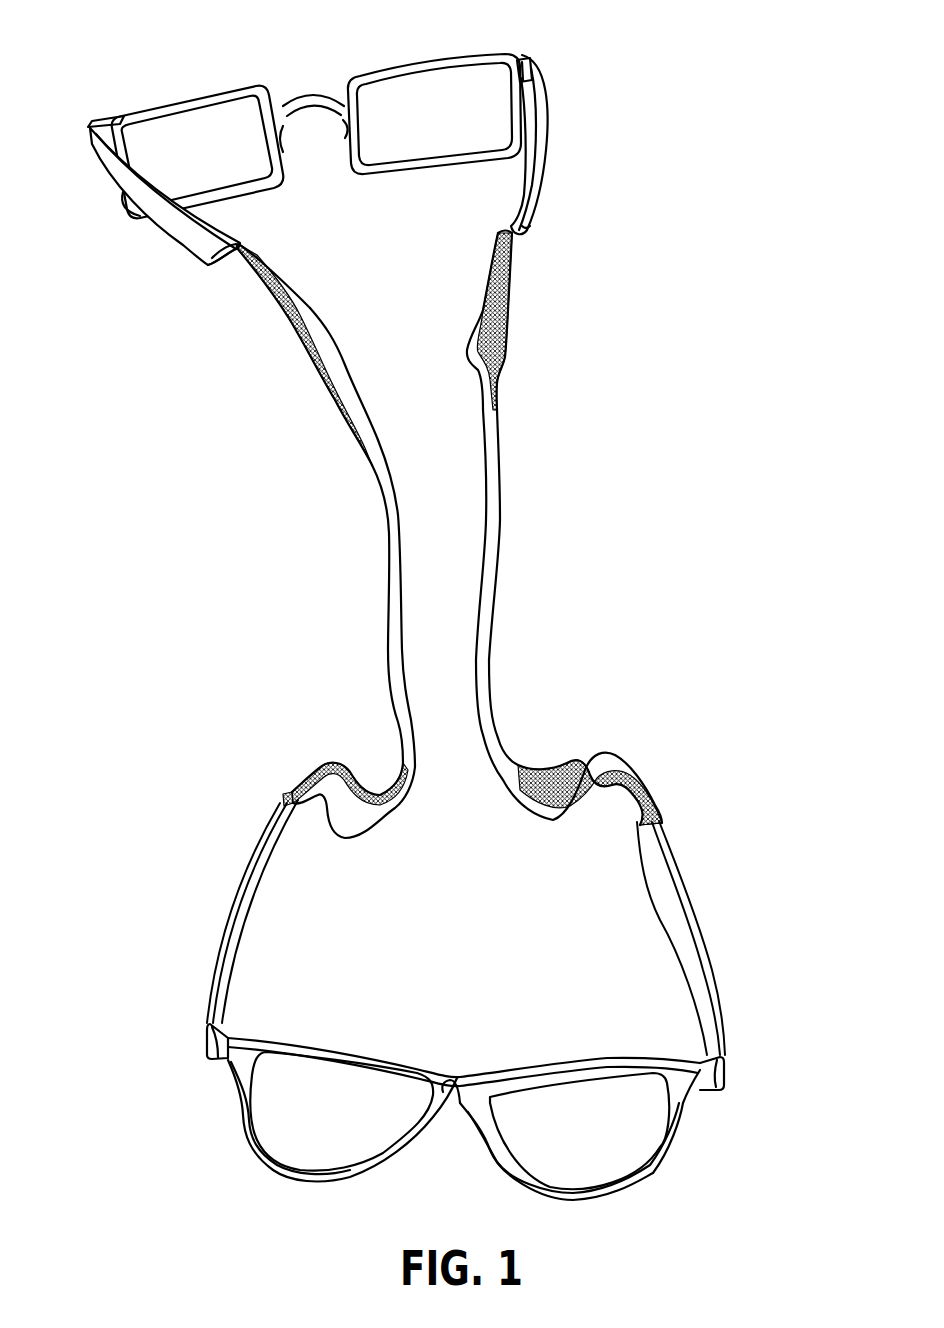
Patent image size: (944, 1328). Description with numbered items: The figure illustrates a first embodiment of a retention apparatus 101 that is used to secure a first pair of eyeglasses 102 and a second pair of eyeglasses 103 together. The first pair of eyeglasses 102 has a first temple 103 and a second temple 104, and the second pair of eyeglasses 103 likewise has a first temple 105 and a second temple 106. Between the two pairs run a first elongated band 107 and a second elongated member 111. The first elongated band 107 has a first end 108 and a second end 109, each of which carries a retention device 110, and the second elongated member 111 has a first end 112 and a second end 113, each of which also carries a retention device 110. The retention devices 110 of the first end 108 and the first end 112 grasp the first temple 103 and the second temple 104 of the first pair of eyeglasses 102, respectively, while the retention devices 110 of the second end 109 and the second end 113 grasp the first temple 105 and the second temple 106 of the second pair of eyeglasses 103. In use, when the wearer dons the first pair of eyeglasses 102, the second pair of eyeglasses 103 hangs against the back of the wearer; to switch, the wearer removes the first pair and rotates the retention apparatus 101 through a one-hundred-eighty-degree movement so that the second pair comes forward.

The retention apparatus 101 is at (708, 166).
The first pair of eyeglasses 102 is at (172, 97).
The second pair of eyeglasses 103 is at (517, 233).
The second temple 104 is at (217, 251).
The first temple 105 is at (673, 853).
The second temple 106 is at (273, 822).
The first elongated band 107 is at (514, 465).
The first end 108 is at (523, 365).
The second end 109 is at (579, 722).
The retention device 110 is at (509, 297).
The second elongated member 111 is at (328, 493).
The first end 112 is at (292, 355).
The second end 113 is at (360, 726).